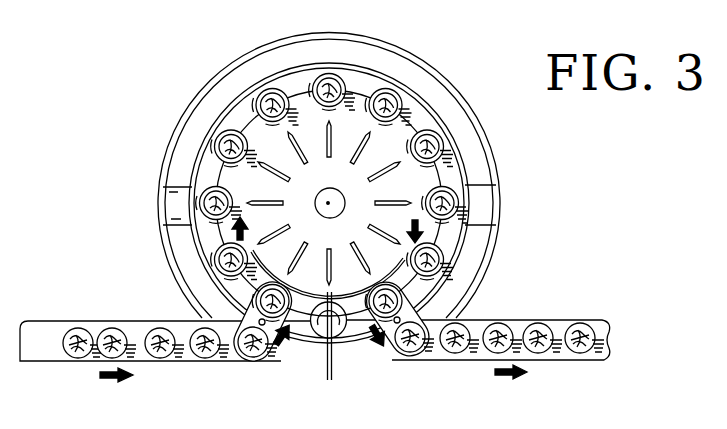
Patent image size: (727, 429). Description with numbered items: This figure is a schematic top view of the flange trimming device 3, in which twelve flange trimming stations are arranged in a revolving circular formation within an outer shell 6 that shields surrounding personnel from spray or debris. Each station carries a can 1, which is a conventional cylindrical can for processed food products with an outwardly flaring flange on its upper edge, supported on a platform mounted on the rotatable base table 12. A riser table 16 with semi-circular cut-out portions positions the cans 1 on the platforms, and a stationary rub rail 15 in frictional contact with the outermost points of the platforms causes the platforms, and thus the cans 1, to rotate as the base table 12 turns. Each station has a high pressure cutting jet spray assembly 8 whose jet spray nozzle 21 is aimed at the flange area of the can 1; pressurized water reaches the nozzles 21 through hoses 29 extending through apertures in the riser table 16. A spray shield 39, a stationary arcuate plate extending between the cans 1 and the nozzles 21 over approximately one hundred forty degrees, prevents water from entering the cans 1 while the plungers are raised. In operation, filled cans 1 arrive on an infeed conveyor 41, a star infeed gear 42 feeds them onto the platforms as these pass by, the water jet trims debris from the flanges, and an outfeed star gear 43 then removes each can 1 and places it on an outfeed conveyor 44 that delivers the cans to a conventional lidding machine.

The cylindrical can 1 is at (214, 262).
The flange trimming device 3 is at (118, 114).
The outer shell 6 is at (492, 253).
The high pressure cutting jet spray assembly 8 is at (265, 213).
The rotatable base table 12 is at (320, 340).
The stationary rub rail 15 is at (196, 232).
The riser table 16 is at (297, 335).
The jet spray nozzle 21 is at (260, 163).
The hoses 29 is at (283, 204).
The spray shield 39 is at (343, 261).
The infeed conveyor 41 is at (96, 320).
The star infeed gear 42 is at (228, 320).
The outfeed star gear 43 is at (386, 355).
The outfeed conveyor 44 is at (473, 352).